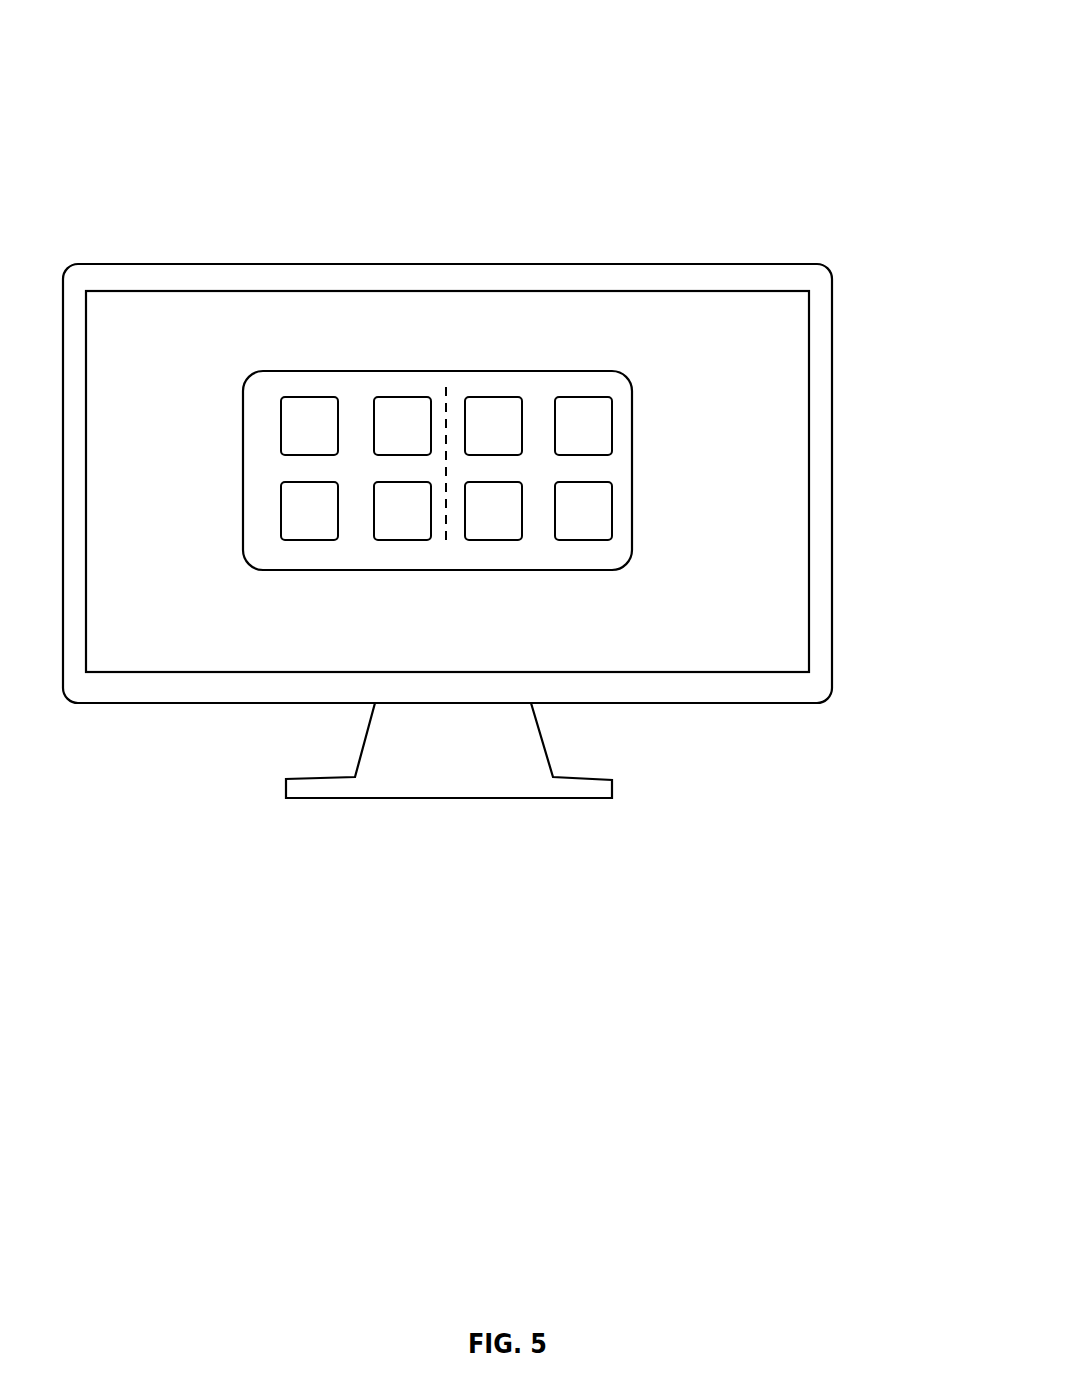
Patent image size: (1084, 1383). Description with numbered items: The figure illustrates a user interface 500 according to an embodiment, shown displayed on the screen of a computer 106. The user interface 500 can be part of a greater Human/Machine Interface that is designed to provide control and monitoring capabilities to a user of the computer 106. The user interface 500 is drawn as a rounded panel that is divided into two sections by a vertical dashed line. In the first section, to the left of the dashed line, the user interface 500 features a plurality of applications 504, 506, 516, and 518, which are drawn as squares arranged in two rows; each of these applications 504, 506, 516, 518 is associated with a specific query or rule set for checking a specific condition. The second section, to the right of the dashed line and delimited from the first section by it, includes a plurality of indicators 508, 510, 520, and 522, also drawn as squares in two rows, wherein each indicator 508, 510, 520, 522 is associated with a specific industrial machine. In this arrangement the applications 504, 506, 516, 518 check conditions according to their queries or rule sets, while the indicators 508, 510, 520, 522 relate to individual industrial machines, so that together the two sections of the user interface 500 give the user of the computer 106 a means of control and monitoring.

The computer 106 is at (832, 482).
The user interface 500 is at (632, 393).
The application 504 is at (290, 538).
The application 506 is at (382, 538).
The indicator 508 is at (468, 538).
The indicator 510 is at (563, 538).
The application 516 is at (287, 398).
The application 518 is at (377, 398).
The indicator 520 is at (470, 398).
The indicator 522 is at (560, 398).